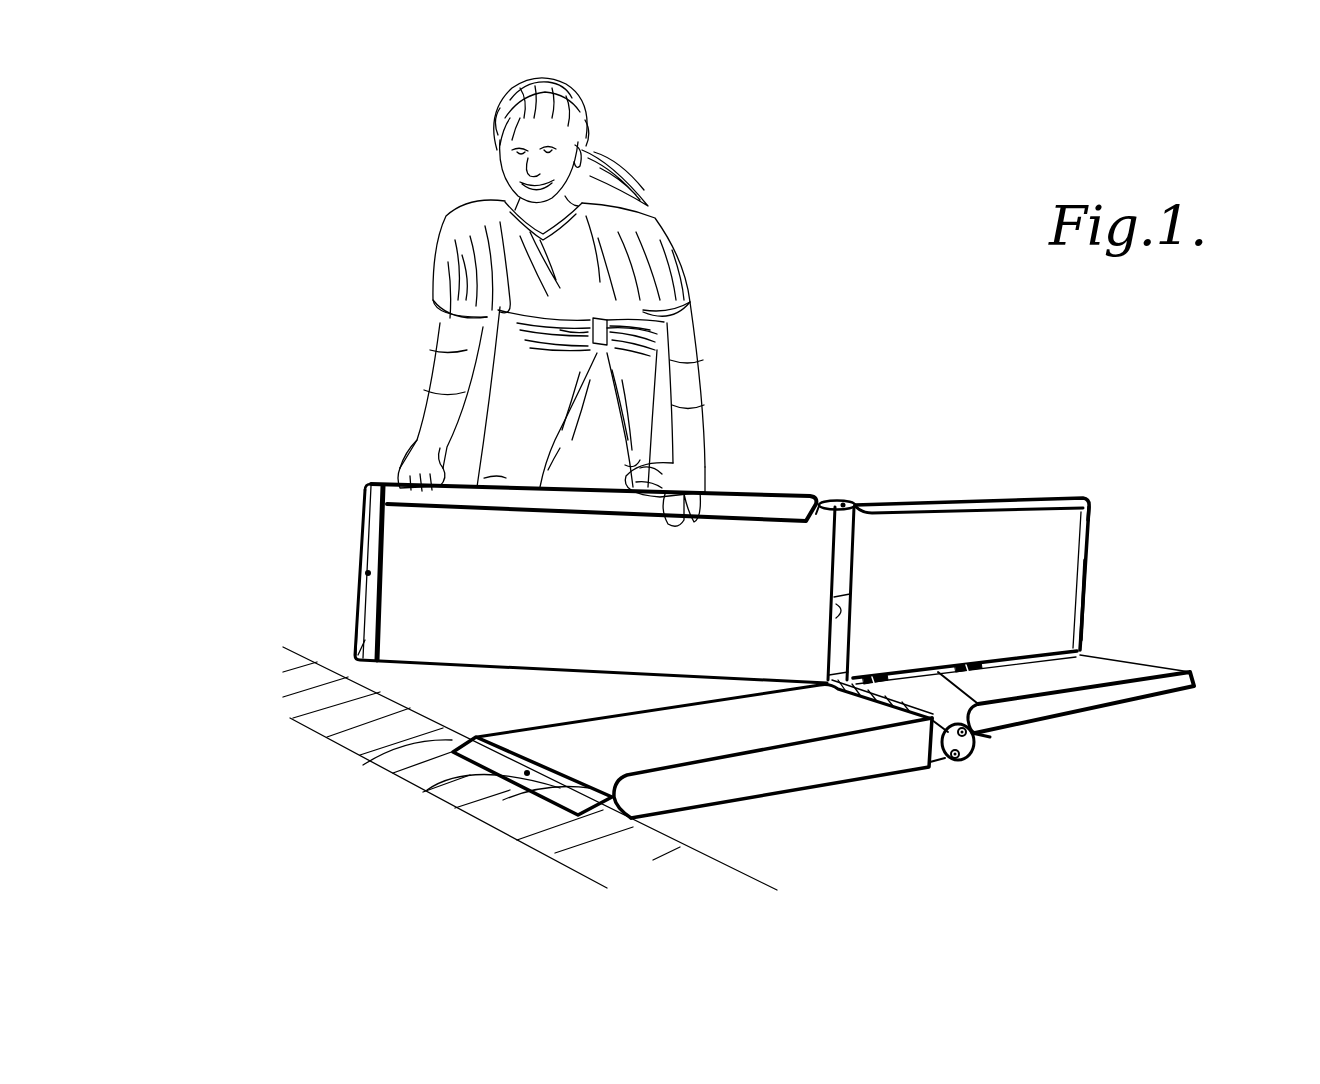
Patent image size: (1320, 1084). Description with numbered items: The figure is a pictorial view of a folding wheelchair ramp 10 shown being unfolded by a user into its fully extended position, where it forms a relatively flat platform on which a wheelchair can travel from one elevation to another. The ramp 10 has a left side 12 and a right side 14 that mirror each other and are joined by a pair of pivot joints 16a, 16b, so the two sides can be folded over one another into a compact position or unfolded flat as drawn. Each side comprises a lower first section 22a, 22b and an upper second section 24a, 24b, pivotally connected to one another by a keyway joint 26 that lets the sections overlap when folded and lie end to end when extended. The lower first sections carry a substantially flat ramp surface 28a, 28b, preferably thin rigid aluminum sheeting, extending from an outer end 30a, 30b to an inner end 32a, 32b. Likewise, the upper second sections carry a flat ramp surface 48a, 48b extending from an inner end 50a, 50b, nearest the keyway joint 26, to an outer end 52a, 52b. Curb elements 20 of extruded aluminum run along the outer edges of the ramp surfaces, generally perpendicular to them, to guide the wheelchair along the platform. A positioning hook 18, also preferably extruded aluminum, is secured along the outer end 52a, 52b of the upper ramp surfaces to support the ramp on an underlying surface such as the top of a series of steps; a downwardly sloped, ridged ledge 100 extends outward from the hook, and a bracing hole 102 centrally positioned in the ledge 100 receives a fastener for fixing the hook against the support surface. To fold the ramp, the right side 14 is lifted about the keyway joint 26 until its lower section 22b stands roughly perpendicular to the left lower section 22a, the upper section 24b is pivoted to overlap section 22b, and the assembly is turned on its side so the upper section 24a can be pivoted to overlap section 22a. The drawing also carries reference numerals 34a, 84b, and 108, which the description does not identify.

The wheelchair ramp 10 is at (962, 434).
The left side 12 is at (866, 784).
The right side 14 is at (913, 484).
The pivot joint 16a is at (880, 672).
The pivot joint 16b is at (973, 663).
The positioning hook 18 is at (380, 762).
The curb element 20 is at (976, 512).
The lower first section 22a is at (1025, 684).
The lower first section 22b is at (972, 582).
The upper second section 24a is at (770, 727).
The upper second section 24b is at (620, 585).
The keyway joint 26 is at (838, 486).
The ramp surface 28a is at (1075, 661).
The ramp surface 28b is at (1062, 604).
The outer end 30a is at (1143, 676).
The outer end 30b is at (1087, 549).
The inner end 32a is at (848, 703).
The inner end 32b is at (831, 569).
The hinge bracket 34a is at (990, 737).
The ramp surface 48a is at (548, 807).
The ramp surface 48b is at (440, 637).
The inner end 50a is at (900, 697).
The inner end 50b is at (833, 623).
The outer end 52a is at (563, 804).
The outer end 52b is at (380, 606).
The end curb 84b is at (420, 548).
The ledge 100 is at (368, 547).
The bracing hole 102 is at (362, 573).
The fastener 108 is at (465, 775).